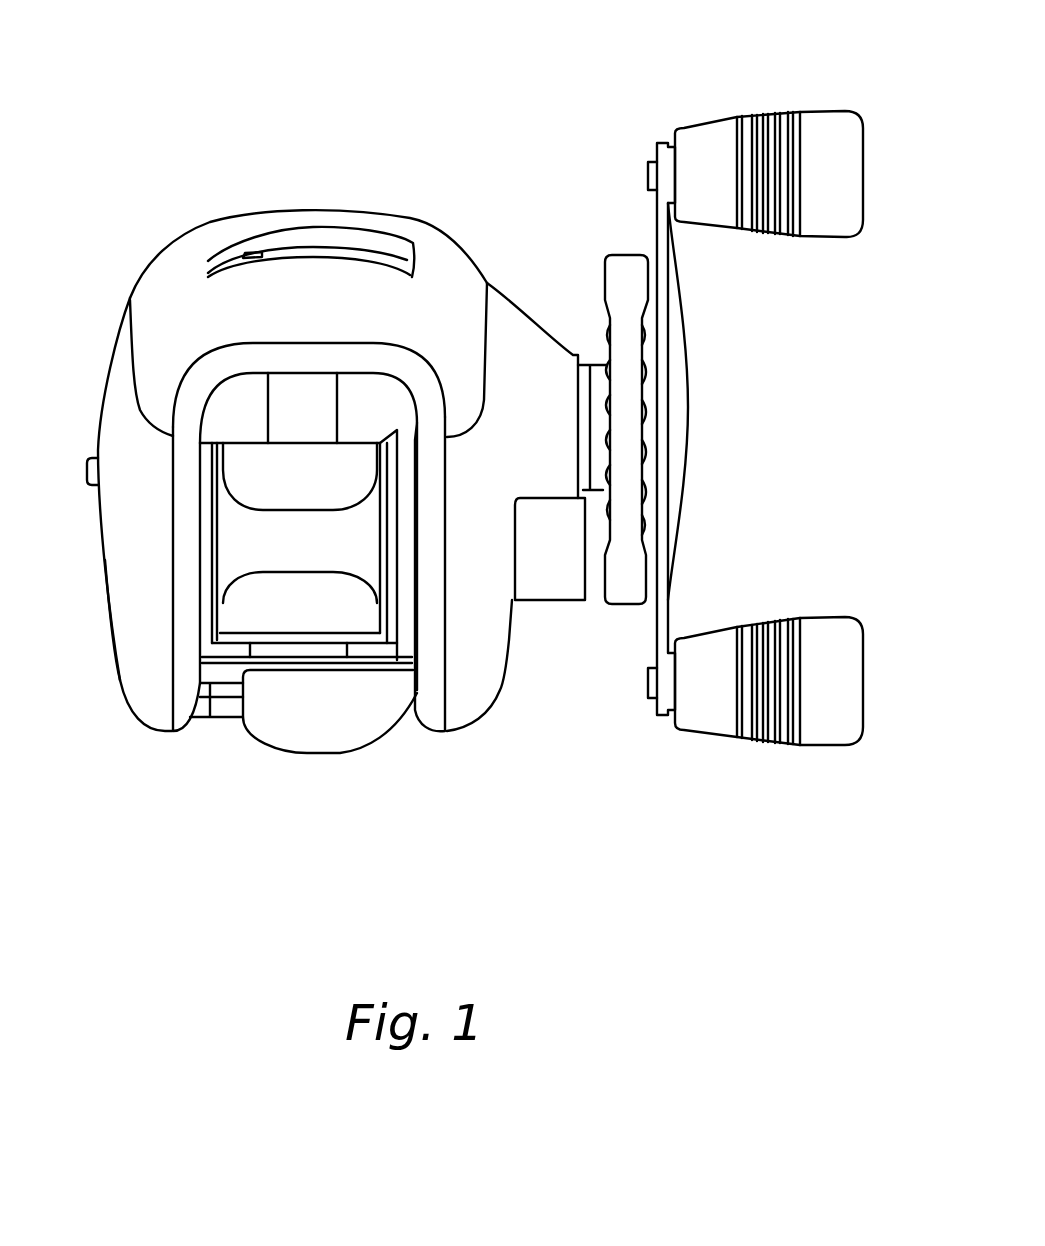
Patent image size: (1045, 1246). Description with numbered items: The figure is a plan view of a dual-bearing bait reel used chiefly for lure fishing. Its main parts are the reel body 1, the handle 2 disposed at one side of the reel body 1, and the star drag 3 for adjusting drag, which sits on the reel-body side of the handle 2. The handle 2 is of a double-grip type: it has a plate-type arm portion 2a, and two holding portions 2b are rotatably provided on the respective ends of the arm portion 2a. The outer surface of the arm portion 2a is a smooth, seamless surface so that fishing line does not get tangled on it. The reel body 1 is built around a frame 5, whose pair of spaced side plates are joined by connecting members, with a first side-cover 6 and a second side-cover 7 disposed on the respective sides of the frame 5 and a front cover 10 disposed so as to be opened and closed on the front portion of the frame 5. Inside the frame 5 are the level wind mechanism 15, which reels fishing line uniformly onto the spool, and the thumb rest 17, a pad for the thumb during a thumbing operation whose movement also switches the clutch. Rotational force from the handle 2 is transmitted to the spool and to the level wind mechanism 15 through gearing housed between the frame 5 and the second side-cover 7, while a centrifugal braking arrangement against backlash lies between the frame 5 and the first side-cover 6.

The reel body 1 is at (148, 252).
The handle 2 is at (683, 288).
The arm portion 2a is at (690, 400).
The holding portions 2b is at (770, 110).
The star drag 3 is at (613, 272).
The frame 5 is at (172, 740).
The first side-cover 6 is at (122, 686).
The second side-cover 7 is at (466, 690).
The front cover 10 is at (338, 272).
The level wind mechanism 15 is at (258, 234).
The thumb rest 17 is at (312, 718).